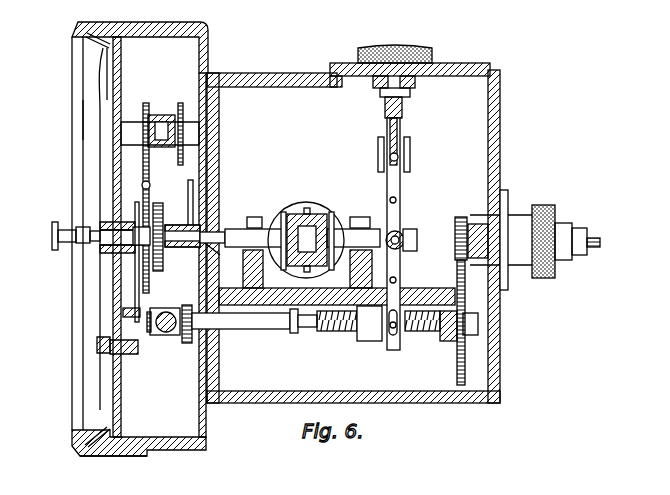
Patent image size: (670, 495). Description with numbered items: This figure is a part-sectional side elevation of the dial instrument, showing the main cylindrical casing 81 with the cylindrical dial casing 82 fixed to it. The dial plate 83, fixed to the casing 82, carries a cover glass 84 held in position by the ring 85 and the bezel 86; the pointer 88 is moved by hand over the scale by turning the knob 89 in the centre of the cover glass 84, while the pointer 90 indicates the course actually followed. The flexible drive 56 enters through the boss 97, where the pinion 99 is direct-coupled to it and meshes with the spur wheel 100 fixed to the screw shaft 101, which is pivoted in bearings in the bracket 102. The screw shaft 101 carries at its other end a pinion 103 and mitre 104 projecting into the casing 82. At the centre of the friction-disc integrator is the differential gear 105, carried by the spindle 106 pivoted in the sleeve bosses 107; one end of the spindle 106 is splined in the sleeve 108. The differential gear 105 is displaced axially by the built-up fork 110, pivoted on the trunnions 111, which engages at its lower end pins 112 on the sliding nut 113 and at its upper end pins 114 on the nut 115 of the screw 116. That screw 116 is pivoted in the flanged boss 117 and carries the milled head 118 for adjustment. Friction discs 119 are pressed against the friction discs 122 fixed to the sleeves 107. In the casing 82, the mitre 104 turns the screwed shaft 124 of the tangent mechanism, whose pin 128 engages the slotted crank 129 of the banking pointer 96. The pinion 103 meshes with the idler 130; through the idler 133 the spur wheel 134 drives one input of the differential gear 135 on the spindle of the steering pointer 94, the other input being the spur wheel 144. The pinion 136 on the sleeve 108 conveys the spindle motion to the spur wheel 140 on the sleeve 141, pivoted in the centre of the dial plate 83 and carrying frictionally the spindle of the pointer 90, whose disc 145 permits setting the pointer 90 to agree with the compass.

The flexible drive 56 is at (594, 247).
The main cylindrical casing 81 is at (500, 130).
The cylindrical dial casing 82 is at (176, 30).
The dial plate 83 is at (107, 414).
The cover glass 84 is at (77, 353).
The ring 85 is at (92, 453).
The bezel 86 is at (100, 430).
The pointer 88 is at (83, 120).
The knob 89 is at (52, 237).
The pointer 90 is at (100, 167).
The steering pointer 94 is at (107, 100).
The pointer 96 is at (100, 382).
The boss 97 is at (520, 265).
The pinion 99 is at (460, 217).
The spur wheel 100 is at (458, 280).
The screw shaft 101 is at (268, 329).
The bracket 102 is at (413, 288).
The pinion 103 is at (187, 343).
The mitre 104 is at (176, 332).
The differential gear 105 is at (320, 214).
The spindle 106 is at (418, 242).
The sleeve bosses 107 is at (240, 229).
The sleeve 108 is at (232, 258).
The built-up fork 110 is at (400, 193).
The trunnions 111 is at (402, 233).
The pins 112 is at (392, 335).
The sliding nut 113 is at (367, 341).
The pins 114 is at (398, 158).
The nut 115 is at (410, 140).
The screw 116 is at (404, 108).
The flanged boss 117 is at (467, 70).
The milled head 118 is at (432, 48).
The friction discs 119 is at (292, 203).
The friction discs 122 is at (281, 214).
The screwed shaft 124 is at (162, 335).
The pin 128 is at (135, 318).
The slotted crank 129 is at (135, 305).
The idler 130 is at (188, 191).
The idler 133 is at (150, 177).
The spur wheel 134 is at (145, 103).
The differential gear 135 is at (158, 115).
The pinion 136 is at (166, 220).
The spur wheel 140 is at (110, 202).
The sleeve 141 is at (100, 248).
The spur wheel 144 is at (181, 103).
The disc 145 is at (133, 263).